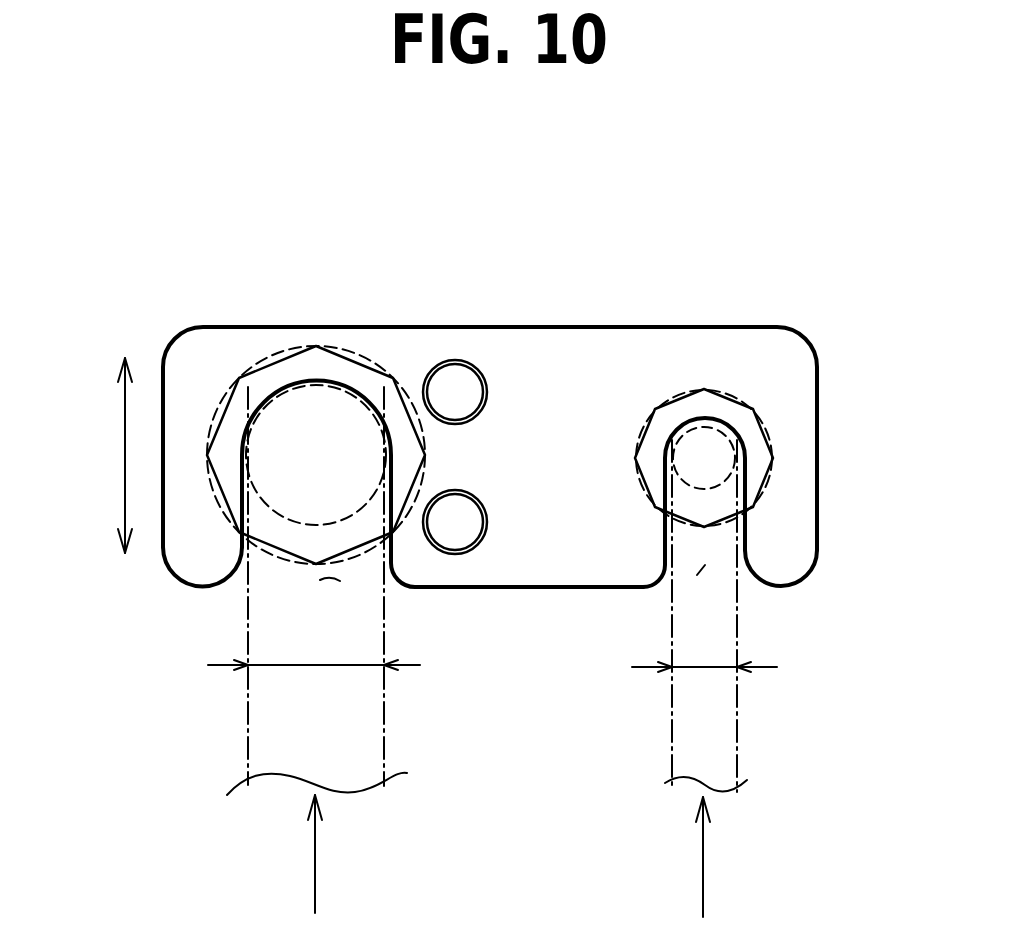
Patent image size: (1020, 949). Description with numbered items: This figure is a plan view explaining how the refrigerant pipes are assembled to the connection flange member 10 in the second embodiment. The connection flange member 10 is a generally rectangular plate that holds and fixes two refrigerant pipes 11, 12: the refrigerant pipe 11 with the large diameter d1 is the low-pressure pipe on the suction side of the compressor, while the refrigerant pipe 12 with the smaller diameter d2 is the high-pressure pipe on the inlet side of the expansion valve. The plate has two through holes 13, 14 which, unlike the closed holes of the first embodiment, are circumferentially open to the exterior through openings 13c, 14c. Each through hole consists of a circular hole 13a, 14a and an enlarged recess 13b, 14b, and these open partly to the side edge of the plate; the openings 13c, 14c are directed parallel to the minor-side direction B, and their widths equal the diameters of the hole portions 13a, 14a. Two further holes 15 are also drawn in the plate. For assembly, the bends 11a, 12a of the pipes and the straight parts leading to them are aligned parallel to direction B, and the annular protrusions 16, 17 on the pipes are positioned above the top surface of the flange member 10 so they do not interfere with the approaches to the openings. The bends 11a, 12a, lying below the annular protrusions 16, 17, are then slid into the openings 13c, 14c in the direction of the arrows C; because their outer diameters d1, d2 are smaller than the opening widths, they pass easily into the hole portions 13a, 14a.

The connection flange member 10 is at (485, 428).
The refrigerant pipe 11 is at (293, 591).
The bend 11a is at (320, 580).
The refrigerant pipe 12 is at (678, 616).
The bend 12a is at (697, 575).
The through hole 13 is at (316, 382).
The circular hole 13a is at (295, 440).
The enlarged recess 13b is at (365, 383).
The opening 13c is at (242, 557).
The through hole 14 is at (732, 367).
The circular hole 14a is at (692, 453).
The enlarged recess 14b is at (733, 410).
The opening 14c is at (750, 568).
The mounting holes 15 is at (457, 388).
The annular protrusion 16 is at (268, 553).
The annular protrusion 17 is at (688, 525).
The minor-side direction B is at (122, 455).
The arrows C is at (317, 863).
The diameter d1 is at (290, 666).
The diameter d2 is at (729, 668).